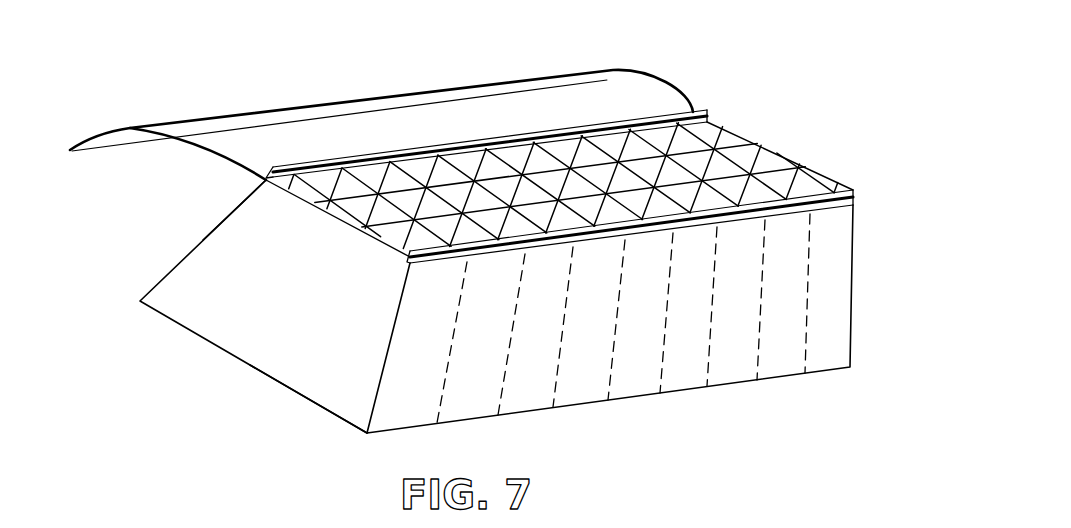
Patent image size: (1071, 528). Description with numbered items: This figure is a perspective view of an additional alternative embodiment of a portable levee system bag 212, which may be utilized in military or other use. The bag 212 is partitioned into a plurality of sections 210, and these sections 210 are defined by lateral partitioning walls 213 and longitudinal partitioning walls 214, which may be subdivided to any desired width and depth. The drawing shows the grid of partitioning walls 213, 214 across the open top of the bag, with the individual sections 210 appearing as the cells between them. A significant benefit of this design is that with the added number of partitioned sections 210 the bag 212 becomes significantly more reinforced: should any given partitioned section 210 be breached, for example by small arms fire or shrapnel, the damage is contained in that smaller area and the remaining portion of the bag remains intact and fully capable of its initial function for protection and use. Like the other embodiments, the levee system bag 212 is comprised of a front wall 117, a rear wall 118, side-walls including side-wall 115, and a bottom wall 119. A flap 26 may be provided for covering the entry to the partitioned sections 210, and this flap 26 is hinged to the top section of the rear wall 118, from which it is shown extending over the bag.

The flap 26 is at (582, 68).
The longitudinal partitioning walls 214 is at (328, 190).
The lateral partitioning walls 213 is at (336, 213).
The sections 210 is at (488, 168).
The levee system bag 212 is at (846, 88).
The front wall 117 is at (832, 284).
The side-wall 115 is at (217, 294).
The rear wall 118 is at (217, 223).
The bottom wall 119 is at (278, 386).